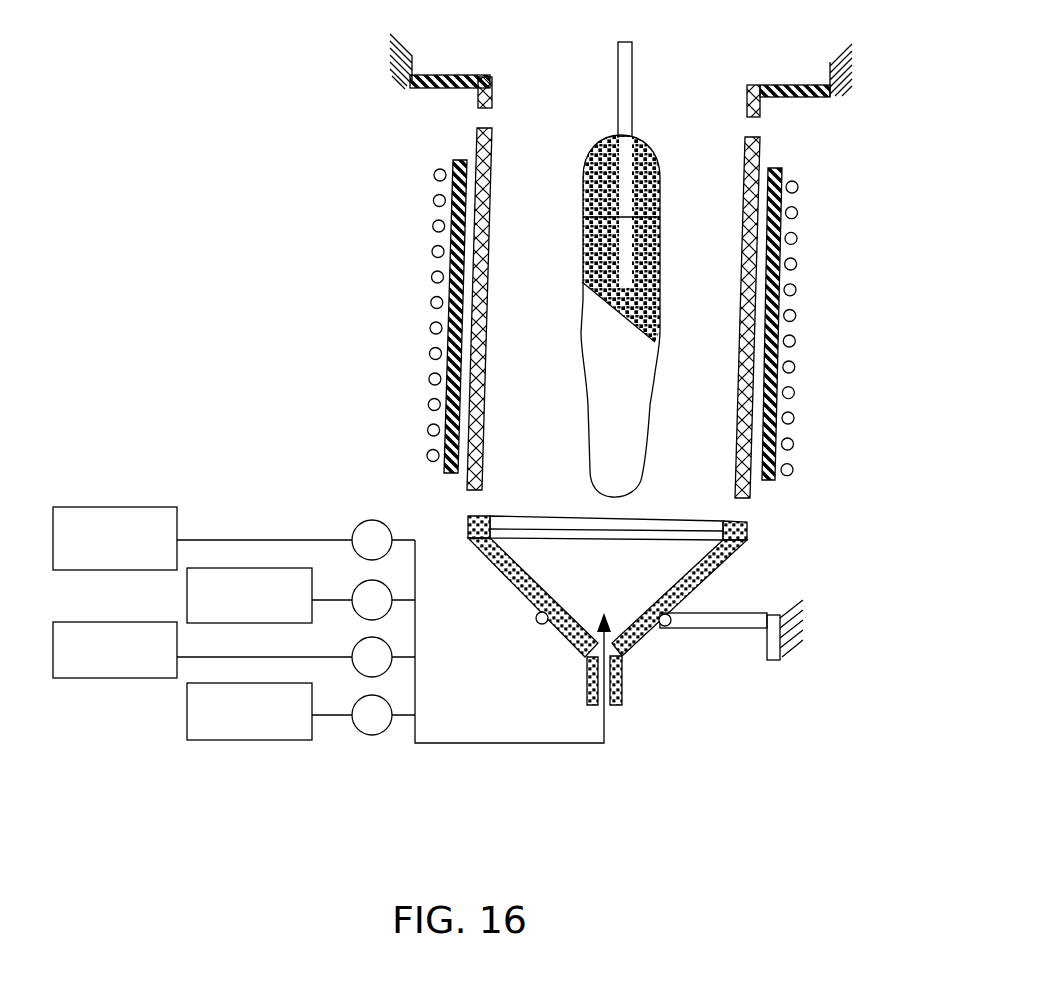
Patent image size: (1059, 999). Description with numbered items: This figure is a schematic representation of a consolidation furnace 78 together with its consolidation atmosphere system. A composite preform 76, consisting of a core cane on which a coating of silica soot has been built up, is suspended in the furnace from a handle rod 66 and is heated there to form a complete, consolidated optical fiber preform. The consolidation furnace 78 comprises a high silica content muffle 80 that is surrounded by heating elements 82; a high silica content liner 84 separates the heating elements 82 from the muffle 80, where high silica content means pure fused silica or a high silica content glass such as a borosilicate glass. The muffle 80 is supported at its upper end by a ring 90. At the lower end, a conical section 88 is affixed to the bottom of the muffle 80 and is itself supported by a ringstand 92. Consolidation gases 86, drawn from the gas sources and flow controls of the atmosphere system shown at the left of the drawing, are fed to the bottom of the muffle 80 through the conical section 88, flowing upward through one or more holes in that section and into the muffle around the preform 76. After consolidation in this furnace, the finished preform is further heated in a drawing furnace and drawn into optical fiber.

The handle rod 66 is at (618, 110).
The composite preform 76 is at (682, 180).
The consolidation furnace 78 is at (336, 302).
The muffle 80 is at (477, 145).
The heating elements 82 is at (796, 316).
The liner 84 is at (783, 227).
The consolidation gases 86 is at (463, 745).
The conical section 88 is at (705, 583).
The ring 90 is at (445, 78).
The ringstand 92 is at (667, 648).